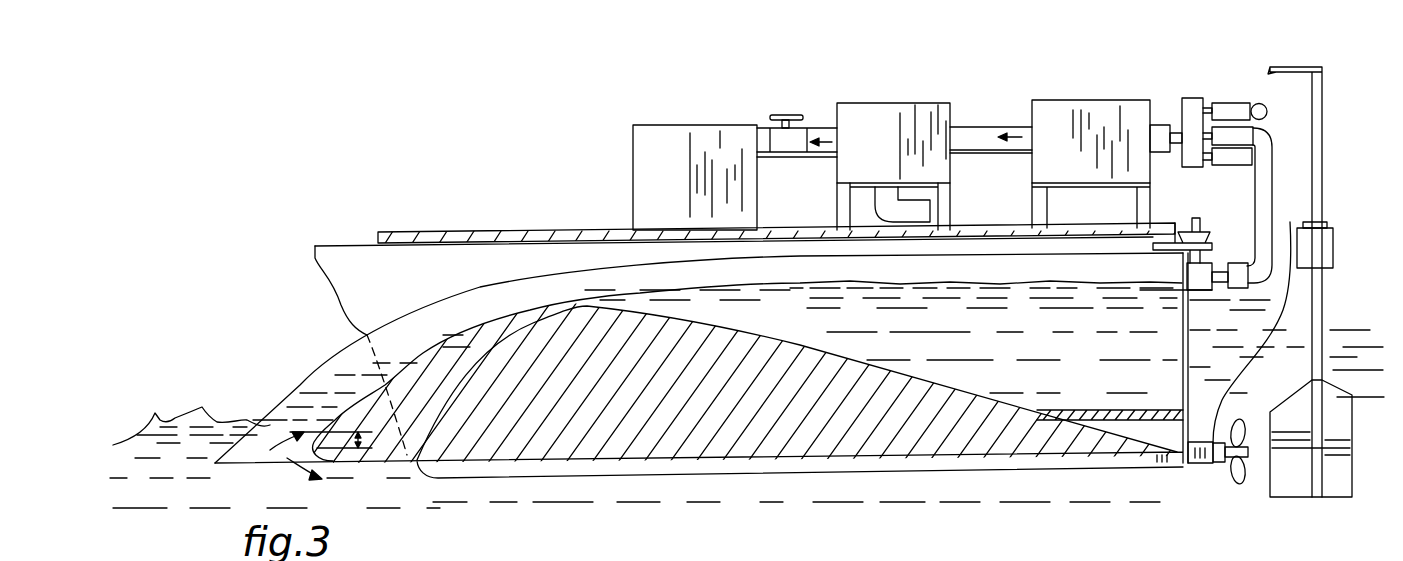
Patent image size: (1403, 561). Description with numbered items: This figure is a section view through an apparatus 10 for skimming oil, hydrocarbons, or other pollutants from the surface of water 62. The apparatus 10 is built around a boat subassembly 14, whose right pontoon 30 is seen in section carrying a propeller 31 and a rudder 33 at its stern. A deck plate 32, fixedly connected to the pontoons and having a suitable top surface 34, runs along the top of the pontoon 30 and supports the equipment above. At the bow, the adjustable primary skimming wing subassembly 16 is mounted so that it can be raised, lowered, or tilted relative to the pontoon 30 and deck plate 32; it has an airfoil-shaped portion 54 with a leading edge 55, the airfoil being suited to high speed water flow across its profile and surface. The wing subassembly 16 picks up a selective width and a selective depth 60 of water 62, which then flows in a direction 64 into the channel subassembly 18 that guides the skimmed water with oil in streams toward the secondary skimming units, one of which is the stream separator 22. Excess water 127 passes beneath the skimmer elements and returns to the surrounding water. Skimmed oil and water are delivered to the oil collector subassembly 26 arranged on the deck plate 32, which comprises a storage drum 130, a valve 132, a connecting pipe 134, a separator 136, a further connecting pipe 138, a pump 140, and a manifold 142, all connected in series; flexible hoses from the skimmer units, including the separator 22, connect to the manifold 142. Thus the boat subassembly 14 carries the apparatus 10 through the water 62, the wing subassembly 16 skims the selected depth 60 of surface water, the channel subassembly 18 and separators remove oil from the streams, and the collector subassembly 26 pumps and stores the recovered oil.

The apparatus 10 is at (1338, 110).
The boat subassembly 14 is at (527, 229).
The primary skimming wing subassembly 16 is at (364, 403).
The channel subassembly 18 is at (362, 336).
The secondary skimming unit 22 is at (1167, 293).
The oil collector subassembly 26 is at (1142, 118).
The right pontoon 30 is at (337, 267).
The propeller 31 is at (1240, 482).
The deck plate 32 is at (378, 238).
The rudder 33 is at (1293, 478).
The top surface 34 is at (440, 232).
The airfoil portion 54 is at (648, 403).
The leading edge 55 is at (277, 453).
The selective depth 60 is at (362, 448).
The water 62 is at (166, 420).
The direction 64 is at (382, 382).
The excess water 127 is at (1233, 333).
The storage drum 130 is at (633, 170).
The valve 132 is at (781, 112).
The connecting pipe 134 is at (815, 160).
The separator 136 is at (853, 115).
The connecting pipe 138 is at (1016, 155).
The pump 140 is at (1045, 110).
The manifold 142 is at (1195, 100).